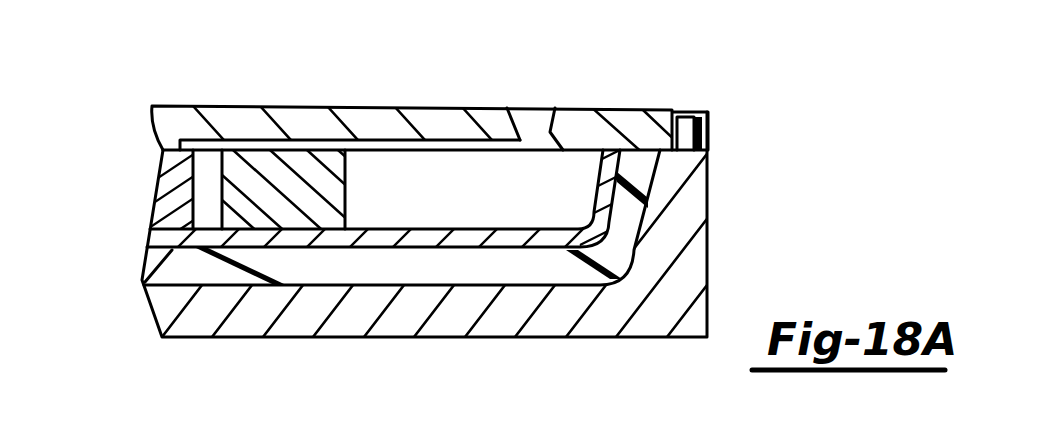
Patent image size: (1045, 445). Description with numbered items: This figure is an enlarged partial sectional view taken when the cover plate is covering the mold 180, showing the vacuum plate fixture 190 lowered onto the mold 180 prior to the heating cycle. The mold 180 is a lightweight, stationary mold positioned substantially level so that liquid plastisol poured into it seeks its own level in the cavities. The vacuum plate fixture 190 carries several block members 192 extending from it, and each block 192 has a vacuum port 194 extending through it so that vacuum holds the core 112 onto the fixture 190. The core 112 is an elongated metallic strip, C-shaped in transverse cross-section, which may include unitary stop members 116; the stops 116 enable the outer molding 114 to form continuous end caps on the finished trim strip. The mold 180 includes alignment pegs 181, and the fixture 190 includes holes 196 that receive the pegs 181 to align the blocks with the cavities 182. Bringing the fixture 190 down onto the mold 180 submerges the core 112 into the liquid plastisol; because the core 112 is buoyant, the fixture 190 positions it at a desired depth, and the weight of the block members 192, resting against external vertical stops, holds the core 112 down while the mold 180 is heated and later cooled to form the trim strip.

The core 112 is at (372, 222).
The outer molding 114 is at (385, 272).
The stop members 116 is at (600, 182).
The mold 180 is at (693, 272).
The alignment pegs 181 is at (673, 114).
The movable heater 182 is at (561, 293).
The vacuum plate fixture 190 is at (708, 130).
The block members 192 is at (152, 165).
The vacuum port 194 is at (184, 200).
The holes 196 is at (660, 106).